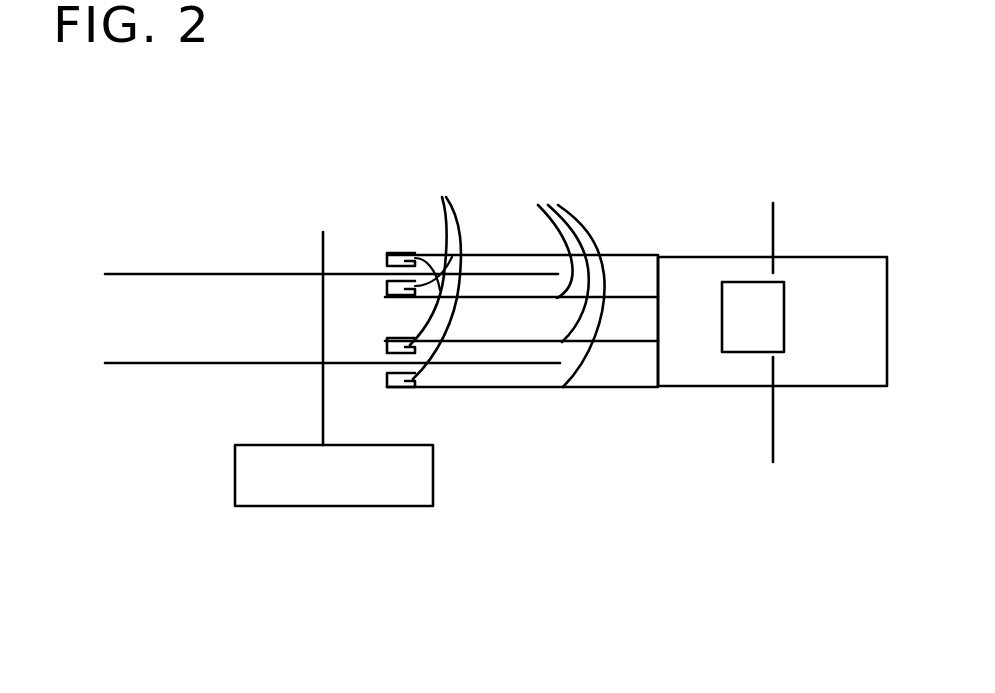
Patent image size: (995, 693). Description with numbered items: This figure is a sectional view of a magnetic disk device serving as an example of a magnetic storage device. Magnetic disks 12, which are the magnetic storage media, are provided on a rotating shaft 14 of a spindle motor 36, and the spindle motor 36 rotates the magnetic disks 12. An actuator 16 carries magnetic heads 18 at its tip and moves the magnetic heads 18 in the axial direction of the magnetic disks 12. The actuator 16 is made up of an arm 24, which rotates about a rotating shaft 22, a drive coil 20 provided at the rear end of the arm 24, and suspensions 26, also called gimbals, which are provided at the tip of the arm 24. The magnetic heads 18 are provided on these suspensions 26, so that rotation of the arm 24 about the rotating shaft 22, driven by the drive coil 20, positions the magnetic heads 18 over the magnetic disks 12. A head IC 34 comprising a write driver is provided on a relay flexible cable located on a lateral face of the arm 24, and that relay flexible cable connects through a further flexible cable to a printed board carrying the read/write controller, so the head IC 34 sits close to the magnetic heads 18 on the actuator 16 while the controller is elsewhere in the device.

The magnetic disks 12 is at (140, 272).
The rotating shaft 14 is at (322, 250).
The actuator 16 is at (673, 256).
The magnetic heads 18 is at (416, 262).
The drive coil 20 is at (857, 372).
The rotating shaft 22 is at (772, 442).
The arm 24 is at (687, 370).
The suspensions 26 is at (500, 254).
The head IC 34 is at (768, 308).
The spindle motor 36 is at (240, 485).